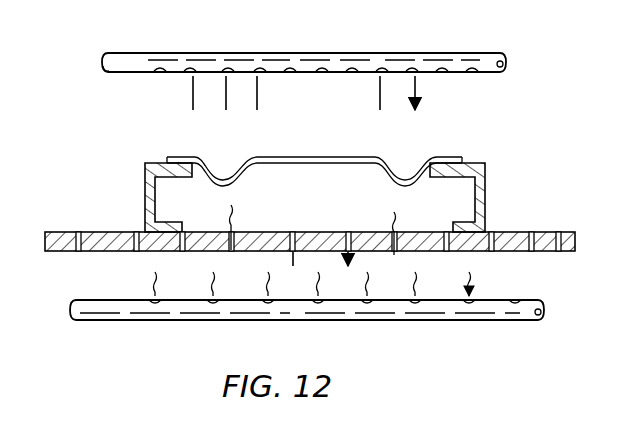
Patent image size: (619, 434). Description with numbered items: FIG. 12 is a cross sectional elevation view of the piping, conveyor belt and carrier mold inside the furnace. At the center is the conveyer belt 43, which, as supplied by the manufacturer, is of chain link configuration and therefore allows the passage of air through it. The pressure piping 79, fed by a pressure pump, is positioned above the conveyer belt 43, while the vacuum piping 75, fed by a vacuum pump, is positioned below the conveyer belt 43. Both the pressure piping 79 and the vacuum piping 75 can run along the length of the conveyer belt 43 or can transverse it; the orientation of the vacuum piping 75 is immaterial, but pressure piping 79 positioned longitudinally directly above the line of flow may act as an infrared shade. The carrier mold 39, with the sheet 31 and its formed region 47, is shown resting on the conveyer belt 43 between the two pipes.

The pressure piping 79 is at (437, 60).
The thermoplastic sheet 31 is at (445, 158).
The formed depression 47 is at (400, 190).
The forming frame 39 is at (492, 197).
The conveyer belt 43 is at (543, 233).
The vacuum piping 75 is at (478, 321).